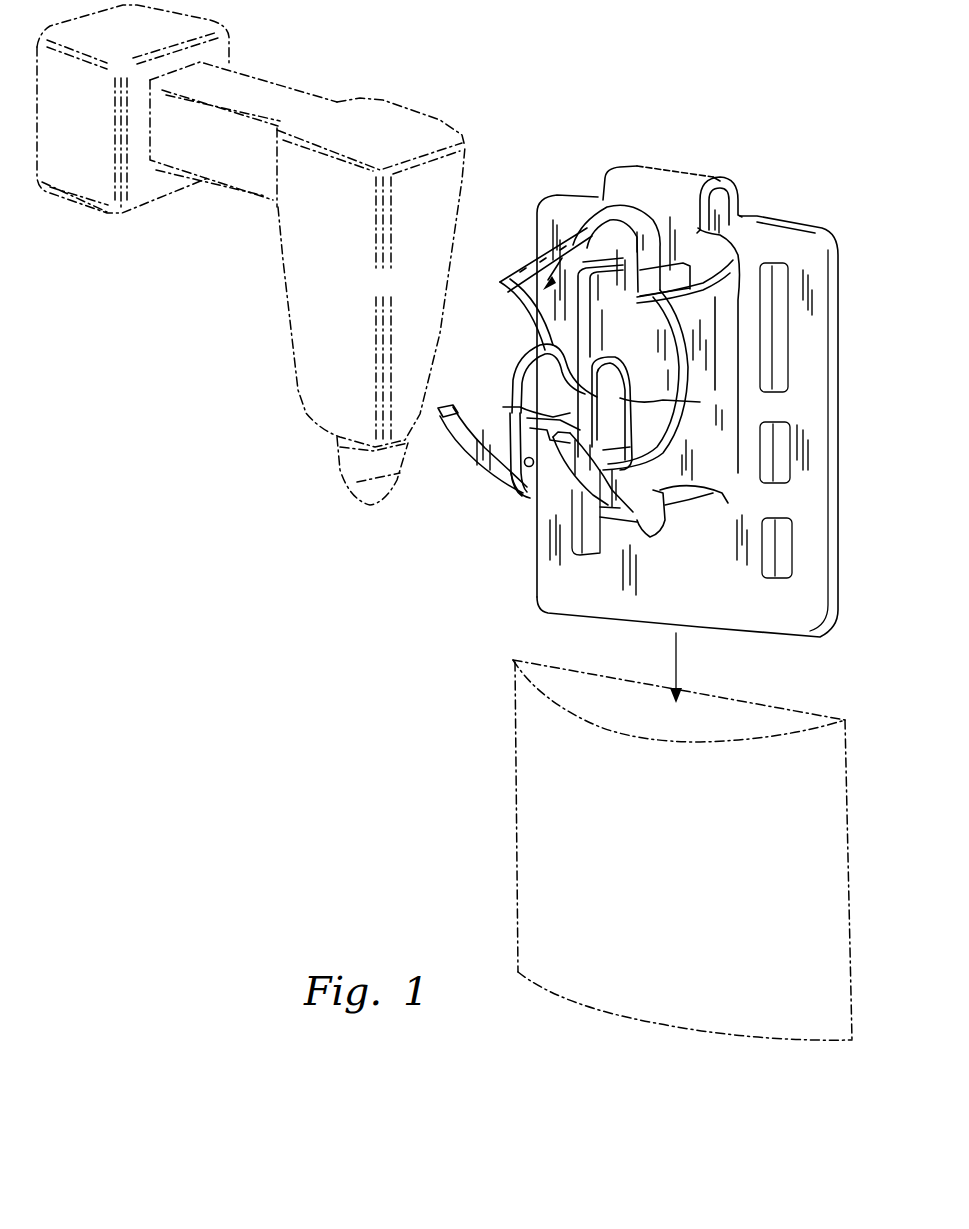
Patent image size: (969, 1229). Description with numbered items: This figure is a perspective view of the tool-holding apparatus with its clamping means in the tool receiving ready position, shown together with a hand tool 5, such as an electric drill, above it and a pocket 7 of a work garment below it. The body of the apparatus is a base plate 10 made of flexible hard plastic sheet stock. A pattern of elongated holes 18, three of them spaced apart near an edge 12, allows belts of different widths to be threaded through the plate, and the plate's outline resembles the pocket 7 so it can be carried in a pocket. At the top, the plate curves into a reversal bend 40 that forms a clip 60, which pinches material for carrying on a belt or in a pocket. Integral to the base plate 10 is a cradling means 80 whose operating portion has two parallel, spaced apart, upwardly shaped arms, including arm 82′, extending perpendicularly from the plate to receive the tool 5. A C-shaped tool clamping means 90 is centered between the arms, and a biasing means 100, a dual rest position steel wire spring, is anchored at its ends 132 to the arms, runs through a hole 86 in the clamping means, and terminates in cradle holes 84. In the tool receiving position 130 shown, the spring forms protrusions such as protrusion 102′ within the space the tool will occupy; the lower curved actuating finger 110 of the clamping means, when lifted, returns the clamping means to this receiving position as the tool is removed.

The hand tool 5 is at (400, 135).
The pocket 7 is at (842, 855).
The base plate 10 is at (793, 238).
The edge 12 is at (832, 332).
The elongated holes 18 is at (780, 302).
The reversal bend 40 is at (703, 179).
The clip 60 is at (778, 198).
The cradling means 80 is at (468, 510).
The upwardly shaped arm 82′ is at (460, 453).
The cradle holes 84 is at (720, 493).
The hole 86 is at (700, 402).
The tool clamping means 90 is at (613, 200).
The biasing means 100 is at (510, 383).
The spring protrusion 102′ is at (533, 350).
The actuating finger 110 is at (620, 398).
The tool receiving position 130 is at (518, 203).
The spring ends 132 is at (527, 494).